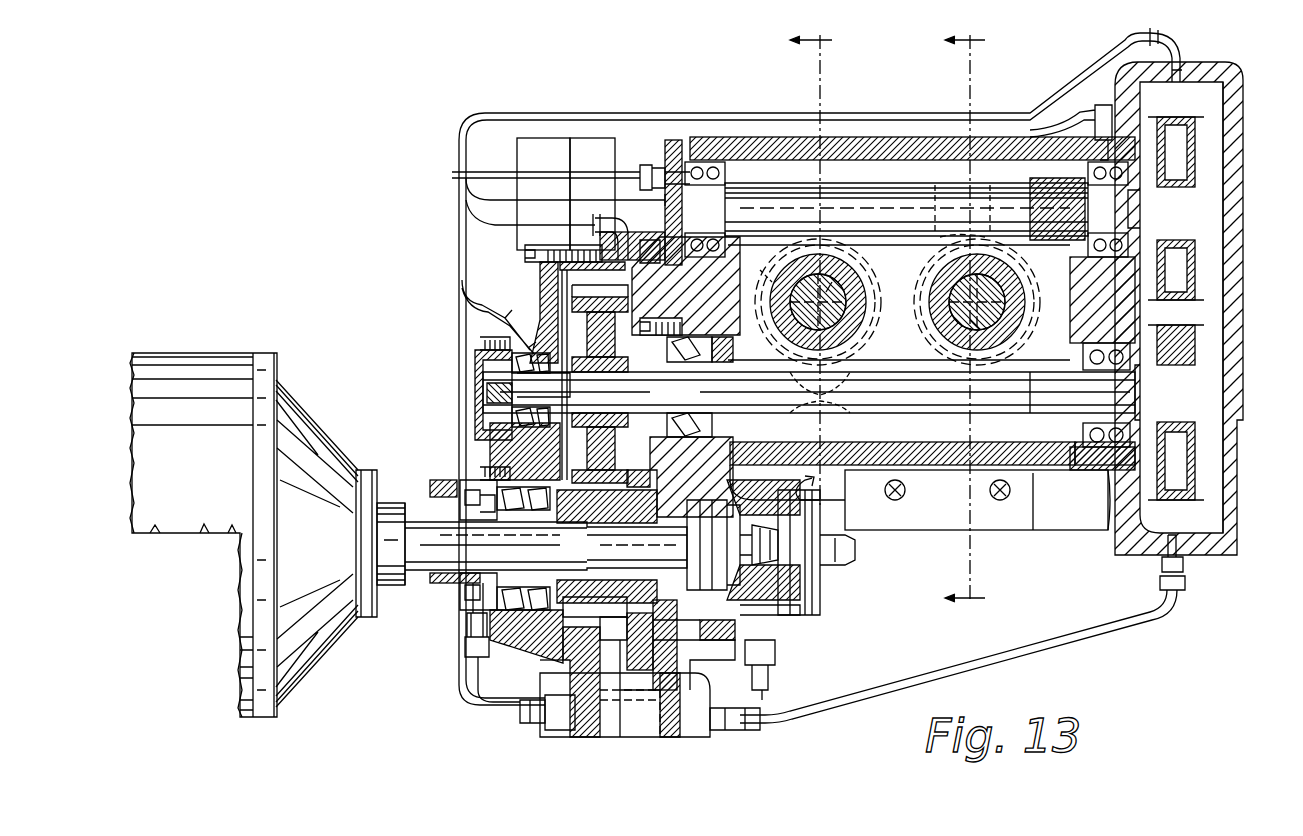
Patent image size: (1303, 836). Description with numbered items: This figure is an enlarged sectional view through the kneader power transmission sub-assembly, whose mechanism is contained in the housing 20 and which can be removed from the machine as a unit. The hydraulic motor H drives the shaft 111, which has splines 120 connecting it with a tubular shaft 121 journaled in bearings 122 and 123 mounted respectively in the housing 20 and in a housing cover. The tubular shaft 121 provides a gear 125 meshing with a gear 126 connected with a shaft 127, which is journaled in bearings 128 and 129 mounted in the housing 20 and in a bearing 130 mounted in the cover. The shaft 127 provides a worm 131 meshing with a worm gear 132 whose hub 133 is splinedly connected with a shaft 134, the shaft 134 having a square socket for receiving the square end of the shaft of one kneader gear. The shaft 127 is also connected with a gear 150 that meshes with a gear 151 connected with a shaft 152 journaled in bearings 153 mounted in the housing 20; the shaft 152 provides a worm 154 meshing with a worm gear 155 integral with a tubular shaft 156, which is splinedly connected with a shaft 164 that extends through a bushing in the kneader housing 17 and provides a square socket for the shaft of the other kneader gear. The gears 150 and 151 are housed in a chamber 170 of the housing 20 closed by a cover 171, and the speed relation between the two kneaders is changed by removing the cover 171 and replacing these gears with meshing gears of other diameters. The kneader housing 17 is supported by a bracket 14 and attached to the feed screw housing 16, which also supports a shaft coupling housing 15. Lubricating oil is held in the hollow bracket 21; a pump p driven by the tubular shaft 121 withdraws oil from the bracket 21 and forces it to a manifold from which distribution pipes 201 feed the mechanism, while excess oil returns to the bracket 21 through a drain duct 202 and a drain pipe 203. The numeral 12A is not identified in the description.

The hydraulic motor H is at (186, 350).
The shaft 111 is at (413, 605).
The splines 120 is at (480, 582).
The distribution pipes 201 is at (458, 178).
The feed screw housing 16 is at (540, 138).
The kneader housing 17 is at (592, 138).
The housing 20 is at (773, 135).
The bearings 153 is at (906, 209).
The shaft 152 is at (852, 182).
The worm 154 is at (960, 170).
The hub 133 is at (805, 272).
The shaft 134 is at (832, 282).
The worm gear 132 is at (752, 280).
The tubular shaft 156 is at (942, 335).
The shaft 164 is at (975, 330).
The worm gear 155 is at (1060, 355).
The worm 131 is at (822, 413).
The bearing 130 is at (492, 440).
The bearing 123 is at (557, 362).
The gear 126 is at (628, 305).
The bearing 128 is at (712, 328).
The bearing 122 is at (605, 530).
The tubular shaft 121 is at (655, 600).
The gear 125 is at (575, 650).
The oil fitting 12A is at (496, 642).
The bracket 21 is at (575, 740).
The drain duct 202 is at (660, 690).
The drain pipe 203 is at (1042, 648).
The pump p is at (805, 605).
The bearing 129 is at (1112, 343).
The shaft 127 is at (955, 405).
The chamber 170 is at (1232, 75).
The cover 171 is at (1244, 100).
The gear 151 is at (1185, 117).
The gear 150 is at (1172, 500).
The shaft coupling housing 15 is at (823, 270).
The bracket 14 is at (980, 321).